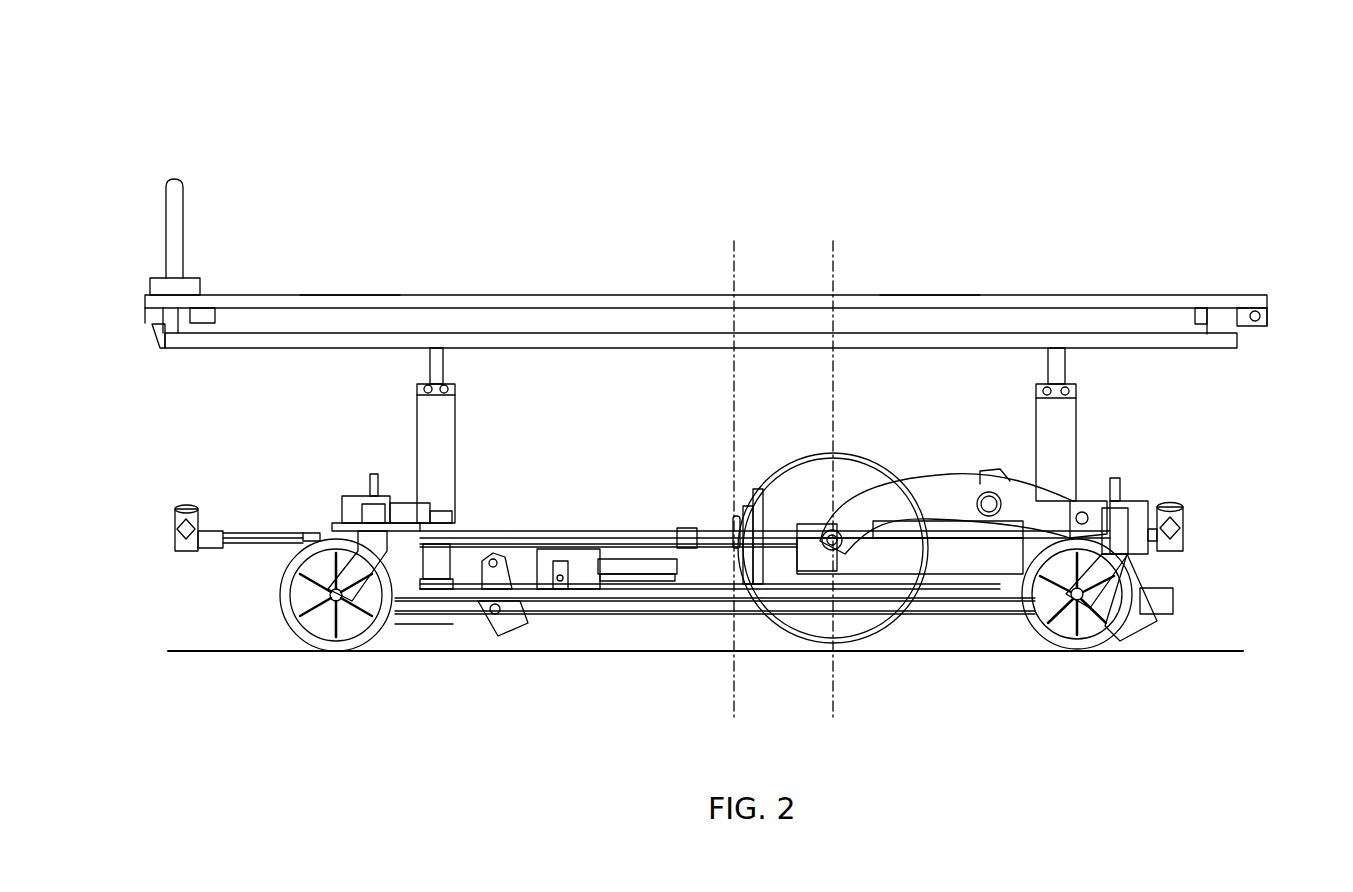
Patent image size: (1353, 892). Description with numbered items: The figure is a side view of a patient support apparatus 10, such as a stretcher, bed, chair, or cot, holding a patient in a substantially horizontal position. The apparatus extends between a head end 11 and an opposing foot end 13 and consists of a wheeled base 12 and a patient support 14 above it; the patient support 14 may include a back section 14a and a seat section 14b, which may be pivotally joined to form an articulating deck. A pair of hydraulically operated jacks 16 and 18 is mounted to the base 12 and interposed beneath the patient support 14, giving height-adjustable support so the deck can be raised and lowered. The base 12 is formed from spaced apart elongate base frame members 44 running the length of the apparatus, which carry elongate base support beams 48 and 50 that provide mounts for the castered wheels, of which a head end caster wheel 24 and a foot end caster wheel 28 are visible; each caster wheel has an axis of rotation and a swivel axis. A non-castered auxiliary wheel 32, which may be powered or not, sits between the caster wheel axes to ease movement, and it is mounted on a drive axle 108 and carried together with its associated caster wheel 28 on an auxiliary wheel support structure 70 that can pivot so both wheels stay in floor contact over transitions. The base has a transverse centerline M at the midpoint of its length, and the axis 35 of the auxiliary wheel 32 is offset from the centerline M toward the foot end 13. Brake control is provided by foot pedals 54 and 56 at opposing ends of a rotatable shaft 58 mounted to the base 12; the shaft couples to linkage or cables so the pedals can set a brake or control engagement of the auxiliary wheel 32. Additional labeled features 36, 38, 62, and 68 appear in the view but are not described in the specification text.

The patient support apparatus 10 is at (1031, 239).
The head end 11 is at (142, 301).
The wheeled base 12 is at (333, 512).
The foot end 13 is at (1273, 299).
The patient support 14 is at (404, 298).
The back section 14a is at (348, 294).
The seat section 14b is at (934, 294).
The hydraulically operated jack 16 is at (1063, 419).
The hydraulically operated jack 18 is at (443, 411).
The castered wheel 24 is at (300, 608).
The castered wheel 28 is at (1044, 636).
The non-castered auxiliary wheel 32 is at (880, 630).
The axis of the auxiliary wheel 35 is at (835, 258).
The mounting block 36 is at (200, 262).
The post 38 is at (179, 177).
The elongate base frame member 44 is at (560, 606).
The elongate base support beam 48 is at (1135, 500).
The elongate base support beam 50 is at (352, 495).
The foot pedal 54 is at (1185, 515).
The foot pedal 56 is at (176, 514).
The rotatable shaft 58 is at (528, 530).
The control unit 62 is at (643, 581).
The floor surface 68 is at (1205, 648).
The auxiliary wheel support structure 70 is at (952, 475).
The drive axle 108 is at (834, 550).
The transverse centerline M is at (733, 257).